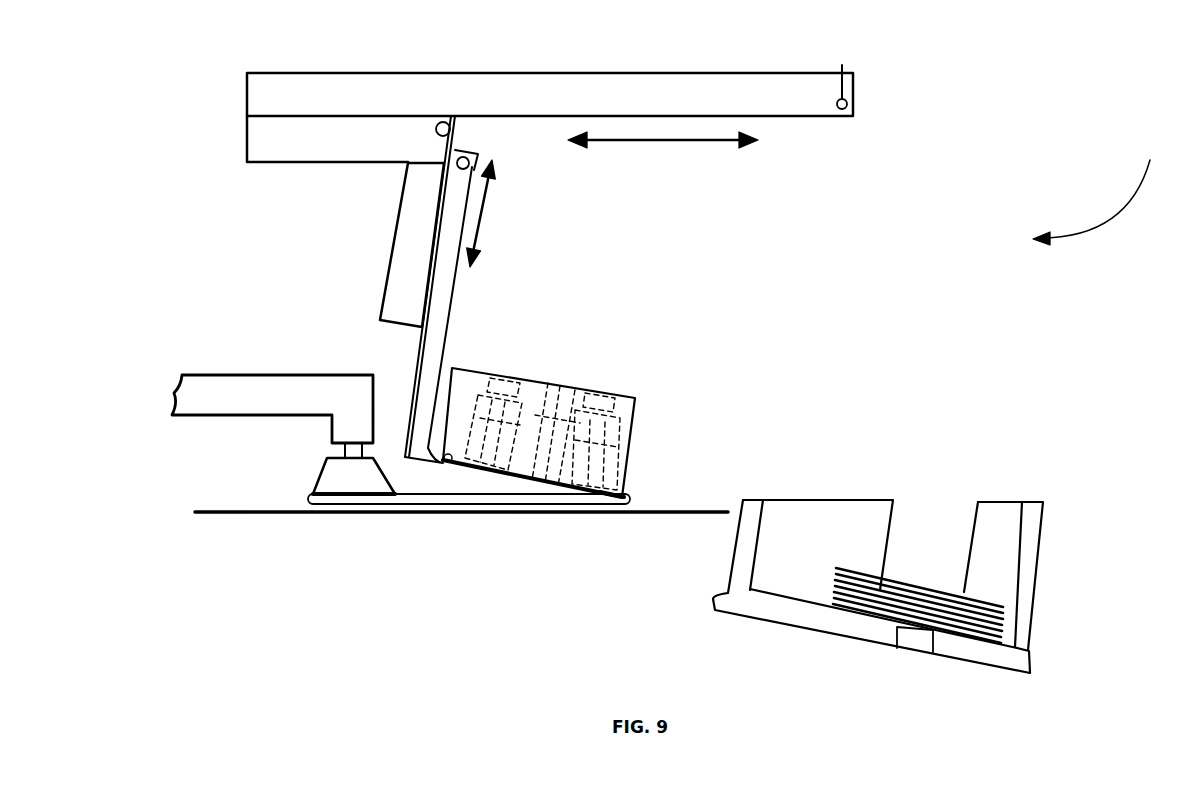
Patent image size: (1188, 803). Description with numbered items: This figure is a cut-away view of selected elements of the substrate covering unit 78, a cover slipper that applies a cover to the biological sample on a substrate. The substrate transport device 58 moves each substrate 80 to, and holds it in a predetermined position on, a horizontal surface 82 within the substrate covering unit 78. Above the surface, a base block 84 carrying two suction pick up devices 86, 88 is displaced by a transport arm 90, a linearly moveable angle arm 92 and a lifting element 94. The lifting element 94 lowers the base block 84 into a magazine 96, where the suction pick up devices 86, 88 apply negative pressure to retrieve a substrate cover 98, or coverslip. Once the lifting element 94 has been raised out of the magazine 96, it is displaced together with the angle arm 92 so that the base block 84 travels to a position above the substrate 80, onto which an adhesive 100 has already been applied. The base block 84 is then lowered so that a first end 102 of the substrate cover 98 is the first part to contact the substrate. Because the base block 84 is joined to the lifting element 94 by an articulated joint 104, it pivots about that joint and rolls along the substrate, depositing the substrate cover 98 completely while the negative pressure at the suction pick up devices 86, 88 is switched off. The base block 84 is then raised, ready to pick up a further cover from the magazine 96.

The substrate transport device 58 is at (282, 392).
The substrate covering unit 78 is at (1101, 187).
The substrate 80 is at (317, 504).
The horizontal surface 82 is at (226, 514).
The base block 84 is at (578, 402).
The suction pick up device 86 is at (607, 369).
The suction pick up device 88 is at (513, 354).
The transport arm 90 is at (318, 80).
The linearly moveable angle arm 92 is at (408, 166).
The lifting element 94 is at (445, 292).
The magazine 96 is at (751, 612).
The substrate cover 98 is at (893, 578).
The adhesive 100 is at (463, 505).
The first end 102 is at (627, 496).
The articulated joint 104 is at (446, 461).